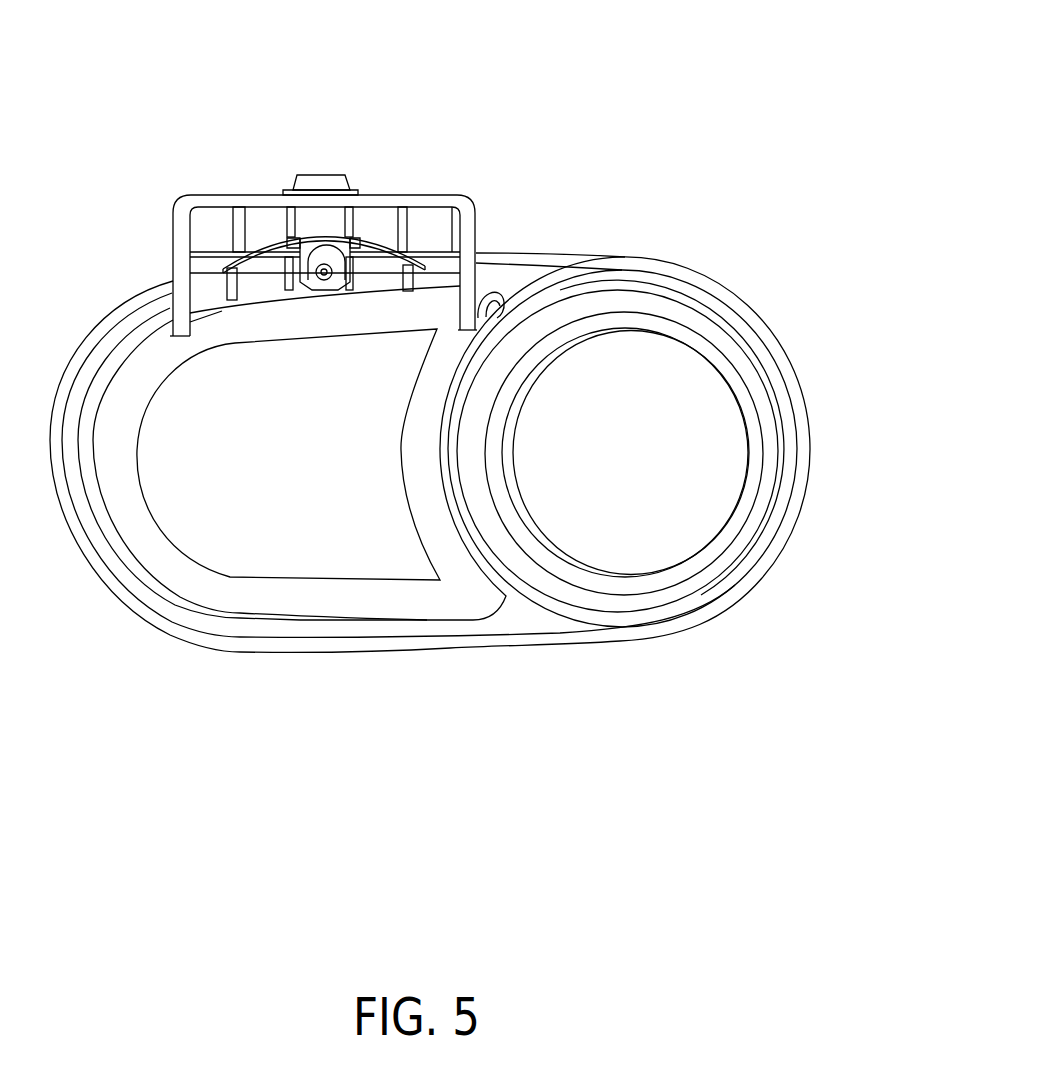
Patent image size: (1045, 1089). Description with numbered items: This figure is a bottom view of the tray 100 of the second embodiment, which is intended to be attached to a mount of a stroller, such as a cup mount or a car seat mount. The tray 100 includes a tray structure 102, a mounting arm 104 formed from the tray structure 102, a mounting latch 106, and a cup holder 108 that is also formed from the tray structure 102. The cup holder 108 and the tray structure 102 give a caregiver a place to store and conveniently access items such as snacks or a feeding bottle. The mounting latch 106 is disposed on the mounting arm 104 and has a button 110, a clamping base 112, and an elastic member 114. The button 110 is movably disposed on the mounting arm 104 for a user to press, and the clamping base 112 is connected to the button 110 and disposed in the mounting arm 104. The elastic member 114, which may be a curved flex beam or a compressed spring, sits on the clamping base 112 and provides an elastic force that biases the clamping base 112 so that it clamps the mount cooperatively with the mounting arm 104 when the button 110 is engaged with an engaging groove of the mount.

The tray 100 is at (682, 64).
The tray structure 102 is at (160, 557).
The mounting arm 104 is at (427, 197).
The mounting latch 106 is at (315, 160).
The cup holder 108 is at (673, 390).
The button 110 is at (333, 186).
The clamping base 112 is at (345, 265).
The elastic member 114 is at (272, 224).